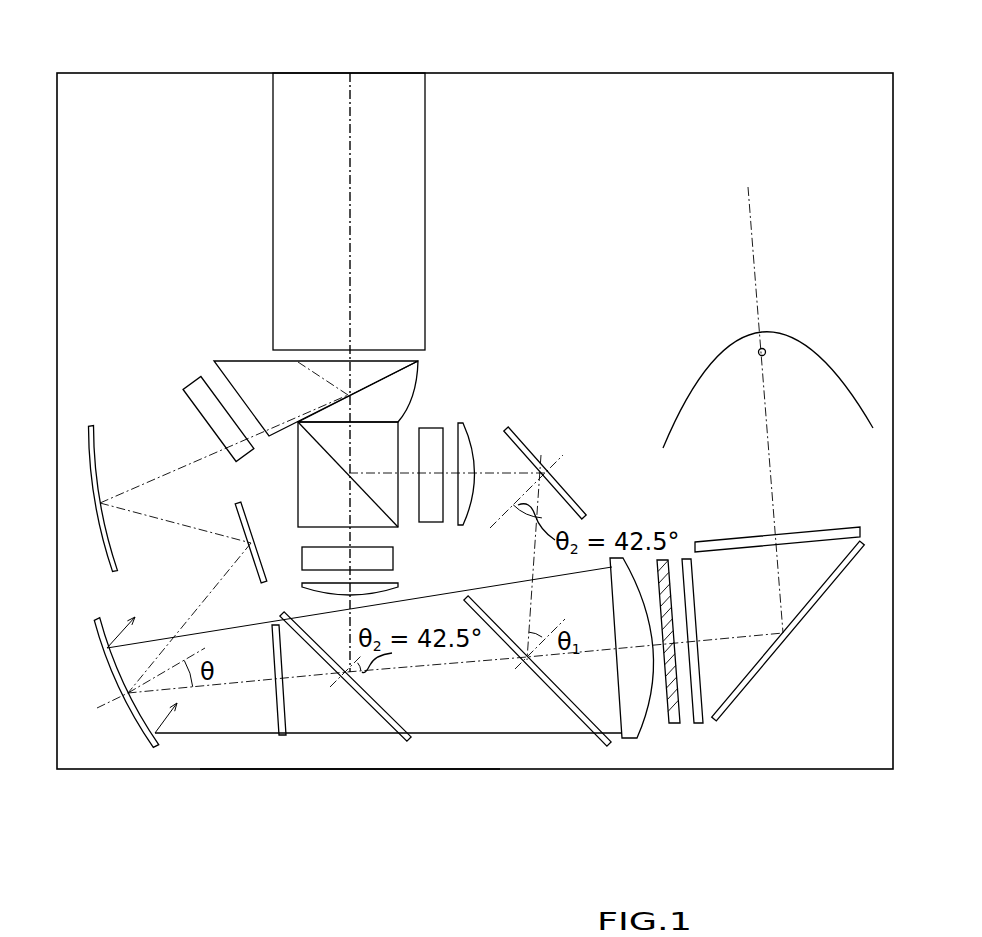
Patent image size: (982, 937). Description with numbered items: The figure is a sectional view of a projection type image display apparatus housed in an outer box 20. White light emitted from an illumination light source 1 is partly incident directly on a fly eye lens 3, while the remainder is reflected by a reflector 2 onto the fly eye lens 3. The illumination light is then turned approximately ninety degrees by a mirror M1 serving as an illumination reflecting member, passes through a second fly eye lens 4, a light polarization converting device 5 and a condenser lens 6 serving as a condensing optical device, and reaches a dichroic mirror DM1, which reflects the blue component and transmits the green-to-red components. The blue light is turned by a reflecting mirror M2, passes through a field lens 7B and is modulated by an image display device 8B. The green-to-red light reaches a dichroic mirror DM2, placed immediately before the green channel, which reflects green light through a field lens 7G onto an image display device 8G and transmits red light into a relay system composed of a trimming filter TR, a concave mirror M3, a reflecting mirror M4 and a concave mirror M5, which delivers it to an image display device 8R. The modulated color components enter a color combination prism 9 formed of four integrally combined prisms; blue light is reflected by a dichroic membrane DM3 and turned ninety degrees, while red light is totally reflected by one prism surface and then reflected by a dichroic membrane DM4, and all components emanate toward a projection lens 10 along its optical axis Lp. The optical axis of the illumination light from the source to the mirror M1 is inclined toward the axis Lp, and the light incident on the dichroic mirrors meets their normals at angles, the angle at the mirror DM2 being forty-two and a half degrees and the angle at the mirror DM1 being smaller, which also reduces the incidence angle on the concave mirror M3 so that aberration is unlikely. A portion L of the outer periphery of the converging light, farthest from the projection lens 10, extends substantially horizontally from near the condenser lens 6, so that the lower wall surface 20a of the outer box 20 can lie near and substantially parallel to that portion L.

The outer box 20 is at (645, 73).
The wall surface 20a is at (323, 768).
The projection lens 10 is at (417, 230).
The optical axis Lp is at (350, 135).
The color combination prism 9 is at (233, 361).
The dichroic membrane DM4 is at (410, 378).
The dichroic membrane DM3 is at (316, 440).
The image display device 8R is at (190, 383).
The image display device 8B is at (431, 428).
The field lens 7B is at (465, 428).
The reflecting mirror M2 is at (526, 445).
The image display device 8G is at (393, 556).
The field lens 7G is at (398, 583).
The concave mirror M5 is at (103, 537).
The reflecting mirror M4 is at (257, 567).
The concave mirror M3 is at (125, 738).
The trimming filter TR is at (273, 740).
The dichroic mirror DM2 is at (410, 741).
The portion of the outer periphery of the illumination light L is at (500, 733).
The dichroic mirror DM1 is at (600, 742).
The condenser lens 6 is at (630, 740).
The light polarization converting device 5 is at (672, 725).
The fly eye lens 4 is at (697, 725).
The fly eye lens 3 is at (822, 541).
The mirror M1 is at (812, 607).
The reflector 2 is at (843, 375).
The illumination light source 1 is at (765, 354).